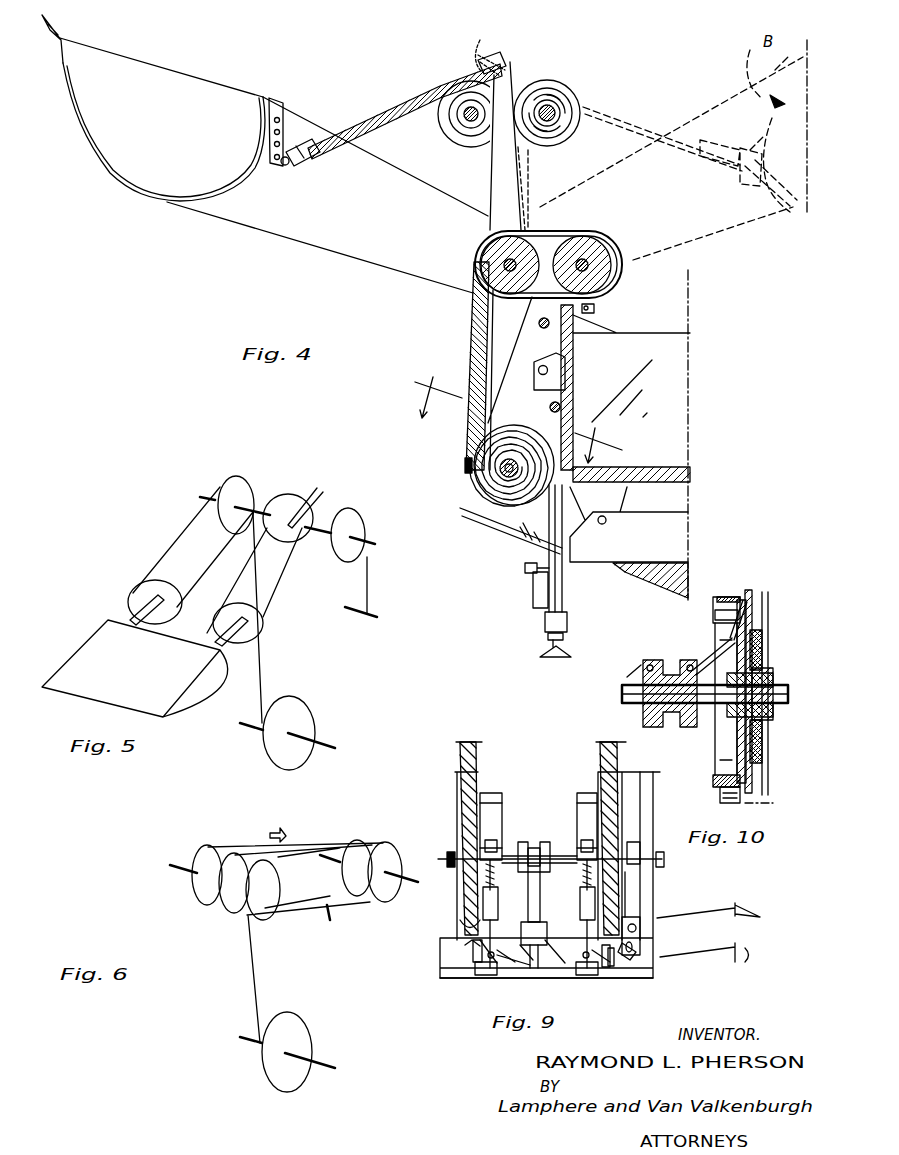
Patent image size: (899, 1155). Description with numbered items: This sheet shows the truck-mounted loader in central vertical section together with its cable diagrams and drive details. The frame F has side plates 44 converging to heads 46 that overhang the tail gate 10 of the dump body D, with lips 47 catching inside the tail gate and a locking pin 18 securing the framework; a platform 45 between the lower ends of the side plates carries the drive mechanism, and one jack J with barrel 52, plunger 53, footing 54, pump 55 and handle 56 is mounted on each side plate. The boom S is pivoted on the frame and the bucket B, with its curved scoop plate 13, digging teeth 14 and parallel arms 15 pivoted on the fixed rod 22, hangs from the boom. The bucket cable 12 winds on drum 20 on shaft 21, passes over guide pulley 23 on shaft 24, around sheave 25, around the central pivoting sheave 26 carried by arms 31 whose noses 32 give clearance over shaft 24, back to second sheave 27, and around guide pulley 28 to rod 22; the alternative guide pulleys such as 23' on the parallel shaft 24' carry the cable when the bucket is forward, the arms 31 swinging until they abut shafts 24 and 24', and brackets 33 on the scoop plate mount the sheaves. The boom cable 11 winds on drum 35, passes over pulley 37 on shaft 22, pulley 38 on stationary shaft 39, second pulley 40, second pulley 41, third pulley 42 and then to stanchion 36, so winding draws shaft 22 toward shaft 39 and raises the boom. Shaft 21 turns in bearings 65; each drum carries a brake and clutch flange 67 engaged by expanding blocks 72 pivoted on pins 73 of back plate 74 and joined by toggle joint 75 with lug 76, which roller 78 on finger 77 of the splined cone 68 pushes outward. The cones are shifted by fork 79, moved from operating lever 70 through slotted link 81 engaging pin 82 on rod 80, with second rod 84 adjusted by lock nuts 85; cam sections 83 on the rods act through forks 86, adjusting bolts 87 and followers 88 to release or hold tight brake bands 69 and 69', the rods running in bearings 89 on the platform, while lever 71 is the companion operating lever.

In FIG. 4, the tail gate 10 is at (575, 362).
In FIG. 9, the tail gate 10 is at (574, 913).
In FIG. 4, the cable 11 is at (550, 233).
In FIG. 6, the cable 11 is at (253, 830).
In FIG. 9, the cable 11 is at (476, 748).
In FIG. 4, the cable 12 is at (386, 112).
In FIG. 5, the cable 12 is at (175, 552).
In FIG. 10, the cable 12 is at (760, 642).
In FIG. 9, the cable 12 is at (600, 748).
In FIG. 4, the scoop plate 13 is at (102, 158).
In FIG. 4, the digging teeth 14 is at (62, 30).
In FIG. 4, the arms or plates 15 is at (306, 232).
In FIG. 4, the locking pin or rod 18 is at (540, 371).
In FIG. 5, the drum 20 is at (300, 713).
In FIG. 10, the drum 20 is at (768, 600).
In FIG. 9, the drum 20 is at (626, 776).
In FIG. 5, the shaft 21 is at (321, 746).
In FIG. 6, the shaft 21 is at (320, 1068).
In FIG. 10, the shaft 21 is at (771, 688).
In FIG. 9, the shaft 21 is at (662, 862).
In FIG. 4, the fixed rod or shaft 22 is at (504, 266).
In FIG. 5, the fixed rod or shaft 22 is at (378, 619).
In FIG. 6, the fixed rod or shaft 22 is at (186, 862).
In FIG. 4, the guide pulley 23 is at (471, 125).
In FIG. 5, the guide pulley 23 is at (241, 494).
In FIG. 4, the alternative guide pulley 23' is at (560, 113).
In FIG. 4, the shaft 24 is at (438, 124).
In FIG. 5, the shaft 24 is at (377, 537).
In FIG. 4, the second shaft 24' is at (570, 90).
In FIG. 4, the sheave 25 is at (300, 160).
In FIG. 5, the sheave 25 is at (165, 590).
In FIG. 4, the central pivoting sheave 26 is at (472, 80).
In FIG. 5, the central pivoting sheave 26 is at (290, 495).
In FIG. 5, the second sheave 27 is at (255, 624).
In FIG. 5, the guide pulley 28 is at (352, 519).
In FIG. 4, the arms or plates 31 is at (493, 182).
In FIG. 4, the nose 32 is at (505, 74).
In FIG. 4, the brackets 33 is at (278, 170).
In FIG. 4, the drum 35 is at (470, 478).
In FIG. 6, the drum 35 is at (300, 1032).
In FIG. 9, the drum 35 is at (481, 772).
In FIG. 6, the stationary clip or stanchion 36 is at (281, 830).
In FIG. 6, the pulley 37 is at (272, 918).
In FIG. 6, the pulley 38 is at (386, 853).
In FIG. 4, the stationary shaft 39 is at (586, 260).
In FIG. 6, the stationary shaft 39 is at (345, 868).
In FIG. 4, the second pulley 40 is at (492, 250).
In FIG. 6, the second pulley 40 is at (230, 912).
In FIG. 4, the second pulley 41 is at (600, 252).
In FIG. 6, the second pulley 41 is at (358, 843).
In FIG. 6, the third pulley 42 is at (200, 896).
In FIG. 4, the side plates 44 is at (522, 419).
In FIG. 9, the side plates 44 is at (653, 886).
In FIG. 4, the platform 45 is at (502, 526).
In FIG. 9, the platform 45 is at (648, 978).
In FIG. 4, the heads 46 is at (606, 299).
In FIG. 4, the lips 47 is at (596, 309).
In FIG. 4, the barrel 52 is at (563, 585).
In FIG. 4, the piston or plunger 53 is at (563, 639).
In FIG. 4, the footing 54 is at (541, 651).
In FIG. 4, the pump 55 is at (533, 583).
In FIG. 4, the handle 56 is at (525, 566).
In FIG. 9, the bearings 65 is at (641, 845).
In FIG. 10, the brake and clutch flange 67 is at (718, 800).
In FIG. 10, the cone 68 is at (660, 713).
In FIG. 9, the cone 68 is at (530, 842).
In FIG. 10, the brake band 69 is at (720, 595).
In FIG. 9, the brake band 69 is at (577, 868).
In FIG. 9, the brake band 69' is at (505, 868).
In FIG. 9, the operating lever 70 is at (722, 913).
In FIG. 9, the operating lever 71 is at (716, 959).
In FIG. 10, the expanding blocks 72 is at (720, 750).
In FIG. 10, the pins 73 is at (712, 778).
In FIG. 10, the back plate 74 is at (735, 743).
In FIG. 10, the toggle joint 75 is at (715, 617).
In FIG. 10, the lug 76 is at (743, 600).
In FIG. 10, the finger 77 is at (690, 662).
In FIG. 9, the finger 77 is at (565, 832).
In FIG. 10, the roller 78 is at (725, 641).
In FIG. 9, the fork 79 is at (541, 899).
In FIG. 9, the rod 80 is at (570, 921).
In FIG. 9, the slotted link 81 is at (637, 952).
In FIG. 9, the pin 82 is at (612, 968).
In FIG. 9, the cam section 83 is at (495, 968).
In FIG. 9, the second rod 84 is at (480, 945).
In FIG. 9, the lock nuts 85 is at (520, 968).
In FIG. 9, the fork 86 is at (485, 957).
In FIG. 9, the adjusting bolt 87 is at (493, 840).
In FIG. 9, the roller or follower 88 is at (475, 967).
In FIG. 9, the bearings 89 is at (475, 978).
In FIG. 4, the bucket or scoop B is at (172, 212).
In FIG. 5, the bucket or scoop B is at (135, 668).
In FIG. 4, the dump body D is at (678, 359).
In FIG. 4, the frame F is at (634, 283).
In FIG. 4, the jack J is at (535, 623).
In FIG. 4, the boom S is at (514, 349).